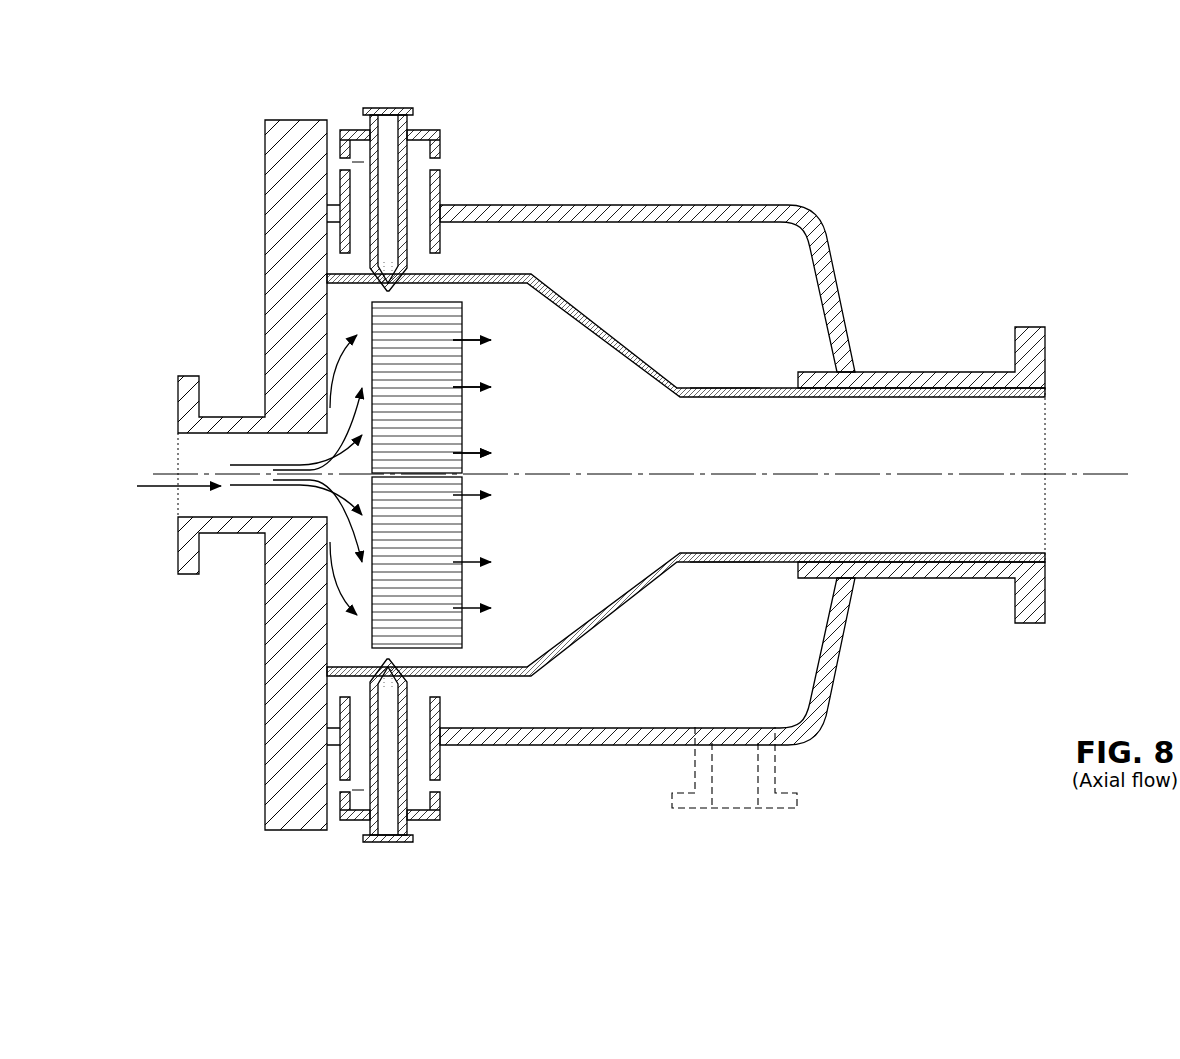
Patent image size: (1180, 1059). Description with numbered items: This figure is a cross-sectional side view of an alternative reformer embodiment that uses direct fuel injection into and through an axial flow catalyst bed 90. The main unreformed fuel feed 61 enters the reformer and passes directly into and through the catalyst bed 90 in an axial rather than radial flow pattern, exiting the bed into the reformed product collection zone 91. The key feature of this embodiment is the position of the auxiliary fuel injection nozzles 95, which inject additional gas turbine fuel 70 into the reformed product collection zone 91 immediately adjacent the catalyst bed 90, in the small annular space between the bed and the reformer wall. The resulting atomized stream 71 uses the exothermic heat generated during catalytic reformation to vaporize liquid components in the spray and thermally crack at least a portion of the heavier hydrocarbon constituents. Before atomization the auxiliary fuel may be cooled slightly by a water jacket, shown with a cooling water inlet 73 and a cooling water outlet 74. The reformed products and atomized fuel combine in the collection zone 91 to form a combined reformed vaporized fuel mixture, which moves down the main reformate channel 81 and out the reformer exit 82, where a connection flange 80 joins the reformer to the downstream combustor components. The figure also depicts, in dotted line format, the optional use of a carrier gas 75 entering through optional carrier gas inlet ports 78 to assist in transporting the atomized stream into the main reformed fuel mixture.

The main unreformed fuel feed 61 is at (164, 488).
The additional gas turbine fuel 70 is at (408, 481).
The atomized stream 71 is at (686, 475).
The cooling water inlet 73 is at (423, 475).
The cooling water outlet 74 is at (327, 471).
The carrier gas 75 is at (734, 797).
The carrier gas inlet ports 78 is at (715, 487).
The connection flange 80 is at (946, 475).
The main reformate channel 81 is at (643, 455).
The reformer exit 82 is at (1068, 475).
The catalyst bed 90 is at (417, 475).
The reformed product collection zone 91 is at (489, 474).
The auxiliary fuel injection nozzles 95 is at (350, 486).